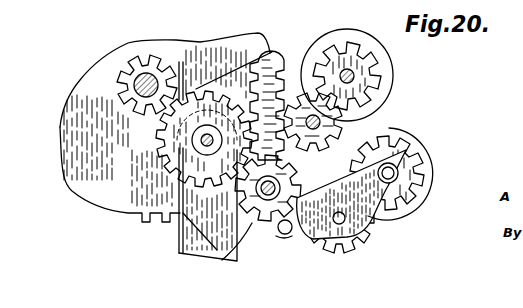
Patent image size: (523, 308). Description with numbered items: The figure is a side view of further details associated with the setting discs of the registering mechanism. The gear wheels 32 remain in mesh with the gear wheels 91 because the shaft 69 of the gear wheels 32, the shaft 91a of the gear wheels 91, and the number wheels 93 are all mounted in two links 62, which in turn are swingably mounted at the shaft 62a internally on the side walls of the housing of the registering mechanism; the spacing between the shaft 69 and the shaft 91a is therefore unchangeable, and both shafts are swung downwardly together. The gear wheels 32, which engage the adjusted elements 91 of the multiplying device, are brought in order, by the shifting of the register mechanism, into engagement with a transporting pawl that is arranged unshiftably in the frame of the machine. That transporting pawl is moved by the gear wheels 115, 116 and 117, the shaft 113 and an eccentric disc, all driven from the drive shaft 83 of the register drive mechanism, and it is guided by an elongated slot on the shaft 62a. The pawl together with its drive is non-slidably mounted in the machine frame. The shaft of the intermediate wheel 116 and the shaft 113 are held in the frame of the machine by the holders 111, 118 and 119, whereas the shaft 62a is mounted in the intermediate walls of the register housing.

The drive shaft 83 is at (133, 95).
The gear wheel 115 is at (160, 61).
The intermediate wheel 116 is at (272, 52).
The shaft 113 is at (225, 122).
The gear wheel 117 is at (296, 181).
The holder 118 is at (183, 224).
The holder 111 is at (217, 250).
The holder 119 is at (243, 240).
The link 62 is at (297, 198).
The shaft 62a is at (290, 228).
The shaft 69 is at (358, 222).
The gear wheel 32 is at (344, 224).
The number wheel 93 is at (423, 186).
The gear wheel 91 is at (400, 207).
The shaft 91a is at (393, 180).